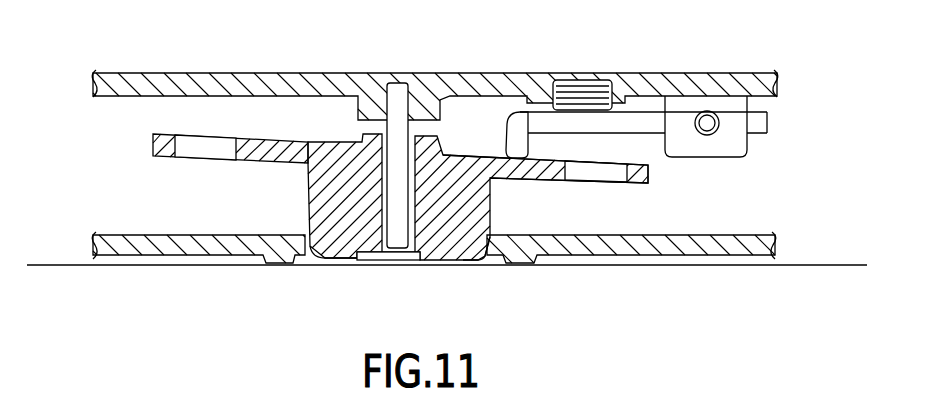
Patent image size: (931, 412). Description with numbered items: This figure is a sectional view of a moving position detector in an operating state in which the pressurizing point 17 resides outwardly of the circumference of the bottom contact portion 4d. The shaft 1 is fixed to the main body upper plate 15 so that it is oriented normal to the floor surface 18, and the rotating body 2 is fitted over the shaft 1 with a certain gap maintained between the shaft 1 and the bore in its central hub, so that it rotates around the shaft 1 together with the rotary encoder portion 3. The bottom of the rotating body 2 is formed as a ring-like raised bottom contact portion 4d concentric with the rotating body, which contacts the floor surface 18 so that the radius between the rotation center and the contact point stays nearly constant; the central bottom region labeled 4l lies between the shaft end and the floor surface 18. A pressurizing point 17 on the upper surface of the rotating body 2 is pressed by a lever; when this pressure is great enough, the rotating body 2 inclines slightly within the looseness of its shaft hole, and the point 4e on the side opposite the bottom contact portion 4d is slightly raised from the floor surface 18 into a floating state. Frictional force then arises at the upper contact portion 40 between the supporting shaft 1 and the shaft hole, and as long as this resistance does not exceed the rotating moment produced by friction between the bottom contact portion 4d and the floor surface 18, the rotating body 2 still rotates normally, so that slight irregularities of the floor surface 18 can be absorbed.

The shaft 1 is at (365, 93).
The rotating body 2 is at (490, 205).
The rotary encoder portion 3 is at (285, 142).
The main body upper plate 15 is at (655, 72).
The pressurizing point 17 is at (516, 115).
The floor surface 18 is at (805, 264).
The upper contact portion 40 is at (306, 187).
The bottom contact portion 4d is at (473, 266).
The point on opposite side of bottom contact portion 4e is at (332, 266).
The bottom plate of block 4l is at (415, 266).